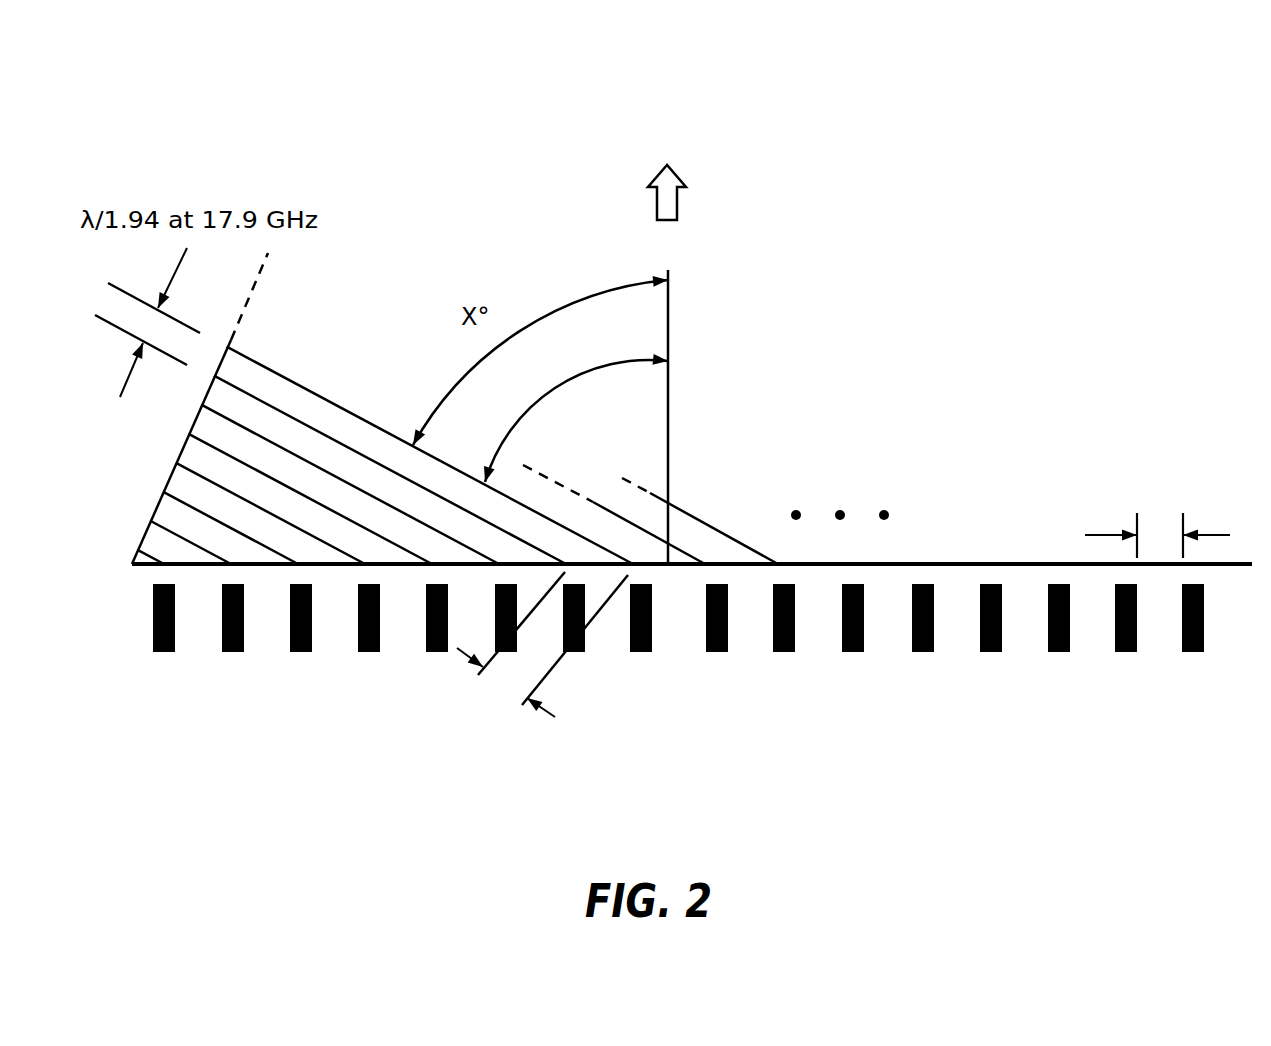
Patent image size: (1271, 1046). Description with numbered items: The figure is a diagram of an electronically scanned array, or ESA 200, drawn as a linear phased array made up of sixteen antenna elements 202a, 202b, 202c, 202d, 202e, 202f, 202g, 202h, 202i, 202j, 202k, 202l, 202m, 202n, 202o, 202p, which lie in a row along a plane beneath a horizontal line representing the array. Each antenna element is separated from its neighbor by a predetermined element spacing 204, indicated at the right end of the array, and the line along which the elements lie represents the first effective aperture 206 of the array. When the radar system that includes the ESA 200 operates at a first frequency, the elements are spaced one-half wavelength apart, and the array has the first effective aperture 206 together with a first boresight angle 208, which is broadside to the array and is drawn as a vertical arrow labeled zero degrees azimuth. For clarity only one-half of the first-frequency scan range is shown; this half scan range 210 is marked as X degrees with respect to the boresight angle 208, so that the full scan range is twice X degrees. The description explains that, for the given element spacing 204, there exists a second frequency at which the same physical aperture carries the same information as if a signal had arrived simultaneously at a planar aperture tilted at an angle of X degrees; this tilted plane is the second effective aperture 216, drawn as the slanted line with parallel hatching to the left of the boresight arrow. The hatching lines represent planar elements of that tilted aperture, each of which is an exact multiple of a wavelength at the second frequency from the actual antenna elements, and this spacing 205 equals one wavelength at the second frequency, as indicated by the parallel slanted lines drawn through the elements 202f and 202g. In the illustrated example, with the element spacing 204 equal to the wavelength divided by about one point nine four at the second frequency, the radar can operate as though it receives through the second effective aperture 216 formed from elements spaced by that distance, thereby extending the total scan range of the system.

The ESA 200 is at (420, 148).
The antenna element 202a is at (165, 652).
The antenna element 202b is at (233, 652).
The antenna element 202c is at (301, 652).
The antenna element 202d is at (369, 652).
The antenna element 202e is at (437, 652).
The antenna element 202f is at (506, 652).
The antenna element 202g is at (574, 652).
The antenna element 202h is at (641, 652).
The antenna element 202i is at (717, 652).
The antenna element 202j is at (784, 652).
The antenna element 202k is at (853, 652).
The antenna element 202l is at (923, 652).
The antenna element 202m is at (991, 652).
The antenna element 202n is at (1059, 652).
The antenna element 202o is at (1126, 652).
The antenna element 202p is at (1193, 652).
The element spacing 204 is at (1160, 522).
The spacing 205 is at (490, 682).
The first effective aperture 206 is at (1248, 560).
The first boresight angle 208 is at (681, 228).
The one-half scan range 210 is at (576, 418).
The second effective aperture 216 is at (140, 535).